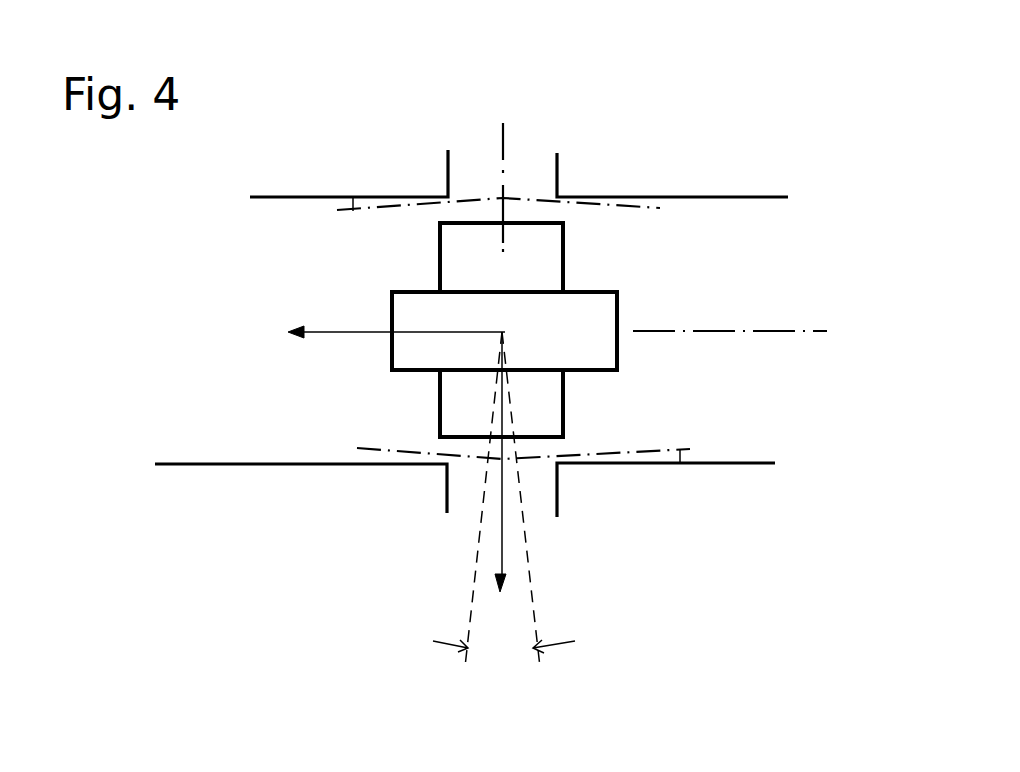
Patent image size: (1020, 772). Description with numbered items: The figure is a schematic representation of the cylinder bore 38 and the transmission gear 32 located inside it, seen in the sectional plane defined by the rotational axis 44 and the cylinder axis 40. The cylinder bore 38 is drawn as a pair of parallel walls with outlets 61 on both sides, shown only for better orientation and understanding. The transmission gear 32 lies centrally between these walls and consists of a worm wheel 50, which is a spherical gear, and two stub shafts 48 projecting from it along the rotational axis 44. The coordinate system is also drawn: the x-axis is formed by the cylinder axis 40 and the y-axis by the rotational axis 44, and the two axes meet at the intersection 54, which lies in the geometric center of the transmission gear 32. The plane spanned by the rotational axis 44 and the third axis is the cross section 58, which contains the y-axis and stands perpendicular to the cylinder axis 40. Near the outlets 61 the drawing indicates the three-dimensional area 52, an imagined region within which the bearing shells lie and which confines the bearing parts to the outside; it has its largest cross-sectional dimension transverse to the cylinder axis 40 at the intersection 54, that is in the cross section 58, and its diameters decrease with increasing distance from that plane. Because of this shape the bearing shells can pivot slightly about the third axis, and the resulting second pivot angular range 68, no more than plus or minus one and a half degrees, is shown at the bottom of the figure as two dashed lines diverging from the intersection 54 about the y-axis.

The transmission gear 32 is at (459, 345).
The cylinder bore 38 is at (746, 211).
The cylinder axis 40 is at (800, 333).
The rotational axis 44 is at (505, 141).
The stub shafts 48 is at (533, 395).
The worm wheel 50 is at (578, 328).
The three-dimensional area 52 is at (352, 190).
The intersection 54 is at (505, 330).
The cross section 58 is at (502, 152).
The outlets 61 is at (448, 480).
The second pivot angular range 68 is at (508, 648).